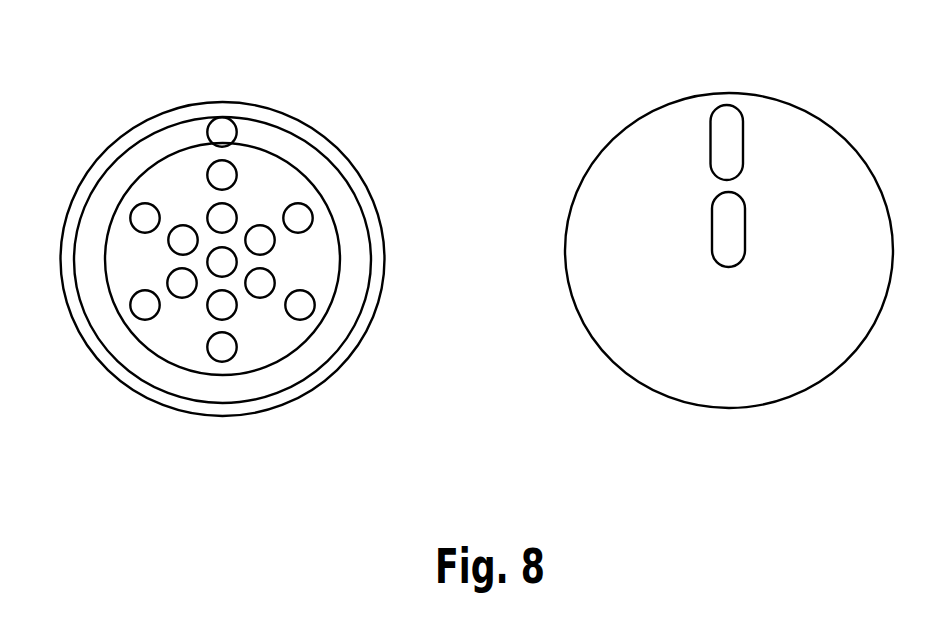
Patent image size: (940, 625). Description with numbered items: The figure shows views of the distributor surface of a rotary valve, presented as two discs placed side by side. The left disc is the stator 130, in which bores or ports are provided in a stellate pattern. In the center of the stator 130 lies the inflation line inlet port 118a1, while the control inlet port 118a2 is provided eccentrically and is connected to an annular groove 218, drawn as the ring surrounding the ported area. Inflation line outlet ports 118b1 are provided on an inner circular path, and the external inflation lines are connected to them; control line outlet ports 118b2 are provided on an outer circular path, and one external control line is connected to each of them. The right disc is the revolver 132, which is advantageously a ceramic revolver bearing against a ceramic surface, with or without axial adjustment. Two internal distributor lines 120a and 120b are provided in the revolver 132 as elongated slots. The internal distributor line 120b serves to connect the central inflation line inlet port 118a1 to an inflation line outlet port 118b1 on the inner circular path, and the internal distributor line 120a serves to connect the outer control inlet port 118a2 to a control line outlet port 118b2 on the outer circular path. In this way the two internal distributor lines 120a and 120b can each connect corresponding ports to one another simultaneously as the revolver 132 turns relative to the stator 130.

The annular groove 218 is at (187, 117).
The stator 130 is at (318, 250).
The inflation line inlet port 118a1 is at (223, 261).
The control inlet port 118a2 is at (220, 128).
The inflation line outlet ports 118b1 is at (221, 216).
The control line outlet ports 118b2 is at (228, 172).
The revolver 132 is at (803, 148).
The internal distributor line 120a is at (731, 127).
The internal distributor line 120b is at (731, 243).